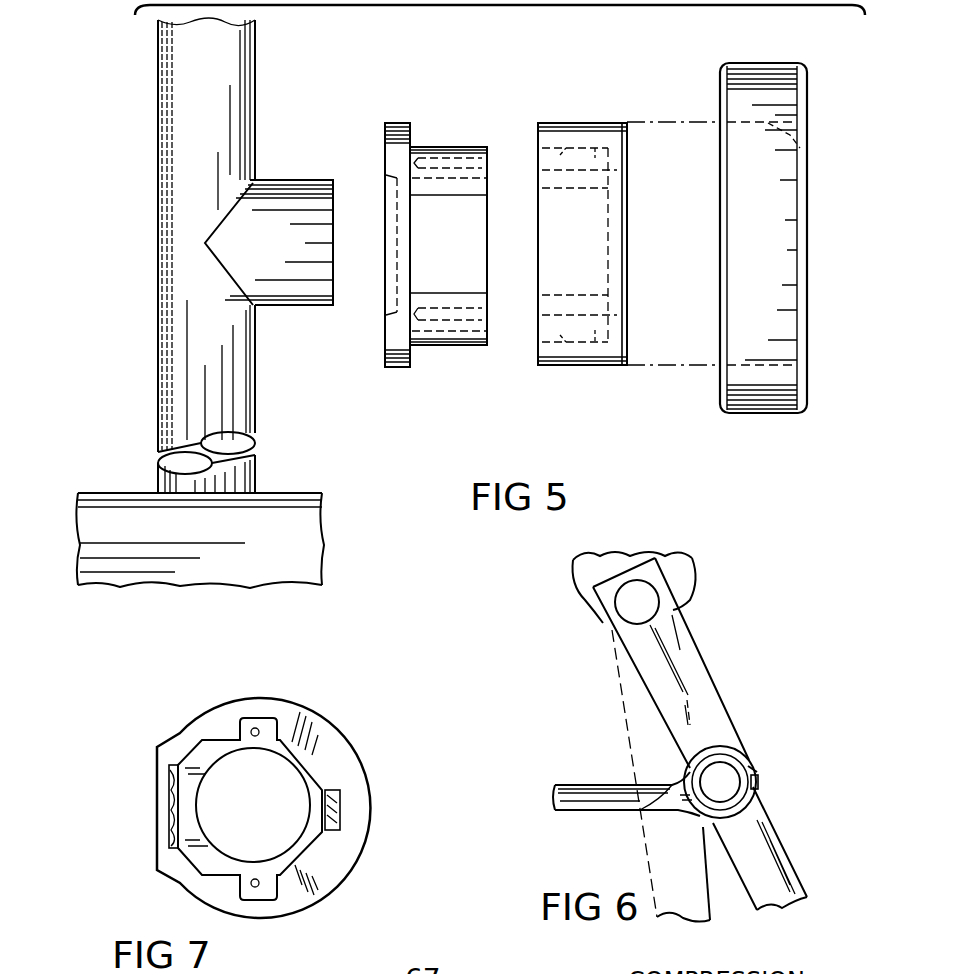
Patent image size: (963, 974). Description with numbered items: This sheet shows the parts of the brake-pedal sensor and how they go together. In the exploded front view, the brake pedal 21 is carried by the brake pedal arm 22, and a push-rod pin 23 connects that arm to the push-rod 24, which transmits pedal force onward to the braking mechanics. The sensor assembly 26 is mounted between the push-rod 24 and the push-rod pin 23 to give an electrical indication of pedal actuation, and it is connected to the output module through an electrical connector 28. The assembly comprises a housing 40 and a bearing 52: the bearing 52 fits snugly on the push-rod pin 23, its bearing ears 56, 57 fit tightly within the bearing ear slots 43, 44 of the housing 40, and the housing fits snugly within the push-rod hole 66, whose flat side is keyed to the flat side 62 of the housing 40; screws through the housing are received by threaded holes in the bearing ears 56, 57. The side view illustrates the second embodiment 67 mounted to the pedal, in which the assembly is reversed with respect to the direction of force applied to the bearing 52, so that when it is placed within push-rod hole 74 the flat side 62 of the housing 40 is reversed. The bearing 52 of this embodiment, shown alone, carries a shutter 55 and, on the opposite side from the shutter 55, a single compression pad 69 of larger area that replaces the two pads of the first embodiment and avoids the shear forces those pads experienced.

In FIG. 5, the brake pedal 21 is at (290, 493).
In FIG. 5, the brake pedal arm 22 is at (258, 368).
In FIG. 5, the push-rod pin 23 is at (291, 180).
In FIG. 6, the push-rod pin 23 is at (724, 782).
In FIG. 5, the push-rod 24 is at (753, 63).
In FIG. 6, the push-rod 24 is at (564, 812).
In FIG. 6, the sensor assembly 26 is at (751, 767).
In FIG. 6, the electrical connector 28 is at (758, 790).
In FIG. 5, the housing 40 is at (565, 123).
In FIG. 5, the bearing ear slot 43 is at (540, 335).
In FIG. 5, the bearing ear slot 44 is at (540, 152).
In FIG. 5, the bearing 52 is at (390, 123).
In FIG. 7, the bearing 52 is at (192, 752).
In FIG. 7, the shutter 55 is at (345, 813).
In FIG. 5, the bearing ear 56 is at (445, 147).
In FIG. 7, the bearing ear 56 is at (253, 718).
In FIG. 5, the bearing ear 57 is at (448, 345).
In FIG. 7, the bearing ear 57 is at (255, 900).
In FIG. 6, the flat side 62 is at (692, 790).
In FIG. 5, the push-rod hole 66 is at (807, 148).
In FIG. 6, the second embodiment 67 is at (752, 745).
In FIG. 7, the single compression pad 69 is at (169, 813).
In FIG. 6, the push-rod hole 74 is at (718, 747).